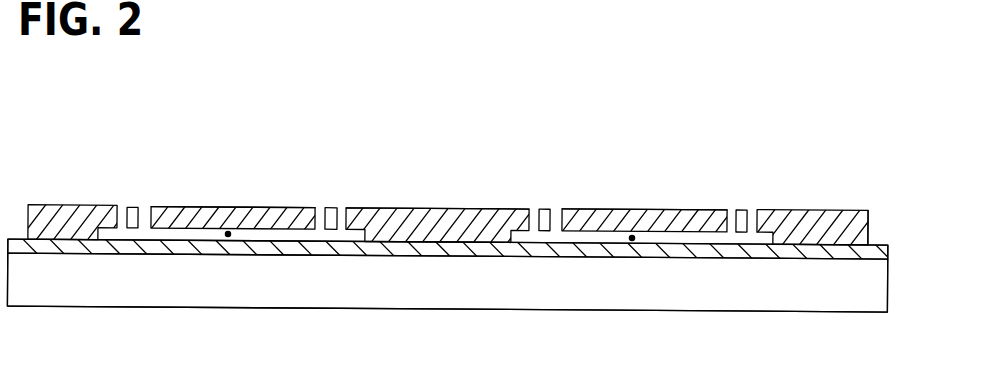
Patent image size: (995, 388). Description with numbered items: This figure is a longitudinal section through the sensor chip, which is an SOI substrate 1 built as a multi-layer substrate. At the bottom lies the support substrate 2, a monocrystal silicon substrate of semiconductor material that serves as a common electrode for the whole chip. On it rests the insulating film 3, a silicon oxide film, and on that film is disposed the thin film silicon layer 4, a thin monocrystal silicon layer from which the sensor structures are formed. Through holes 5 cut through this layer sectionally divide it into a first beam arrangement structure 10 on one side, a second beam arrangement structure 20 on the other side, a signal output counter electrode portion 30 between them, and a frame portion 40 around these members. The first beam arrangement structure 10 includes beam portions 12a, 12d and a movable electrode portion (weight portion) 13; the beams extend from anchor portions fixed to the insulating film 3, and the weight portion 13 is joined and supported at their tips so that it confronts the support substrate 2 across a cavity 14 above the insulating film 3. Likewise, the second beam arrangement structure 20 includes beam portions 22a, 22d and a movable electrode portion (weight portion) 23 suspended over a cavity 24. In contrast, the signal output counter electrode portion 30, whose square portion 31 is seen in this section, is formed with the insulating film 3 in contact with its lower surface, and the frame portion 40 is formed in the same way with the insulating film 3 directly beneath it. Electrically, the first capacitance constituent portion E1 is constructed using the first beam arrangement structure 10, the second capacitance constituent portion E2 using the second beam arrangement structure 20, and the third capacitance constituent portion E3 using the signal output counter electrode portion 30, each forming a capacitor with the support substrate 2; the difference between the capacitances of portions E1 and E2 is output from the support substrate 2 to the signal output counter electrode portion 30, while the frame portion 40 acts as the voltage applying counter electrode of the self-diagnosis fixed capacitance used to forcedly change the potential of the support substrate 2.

The SOI substrate 1 is at (750, 312).
The support substrate 2 is at (835, 301).
The insulating film 3 is at (857, 253).
The thin film silicon layer 4 is at (868, 232).
The through holes 5 is at (117, 205).
The first beam arrangement structure 10 is at (235, 206).
The beam portion 12a is at (129, 206).
The beam portion 12d is at (331, 207).
The movable electrode portion (weight portion) 13 is at (205, 206).
The cavity 14 is at (228, 236).
The second beam arrangement structure 20 is at (672, 208).
The beam portion 22a is at (543, 207).
The beam portion 22d is at (740, 208).
The movable electrode portion (weight portion) 23 is at (621, 208).
The cavity 24 is at (632, 240).
The signal output counter electrode portion 30 is at (476, 182).
The square portion 31 is at (403, 207).
The frame portion 40 is at (843, 210).
The first capacitance constituent portion E1 is at (229, 144).
The second capacitance constituent portion E2 is at (655, 144).
The third capacitance constituent portion E3 is at (440, 144).